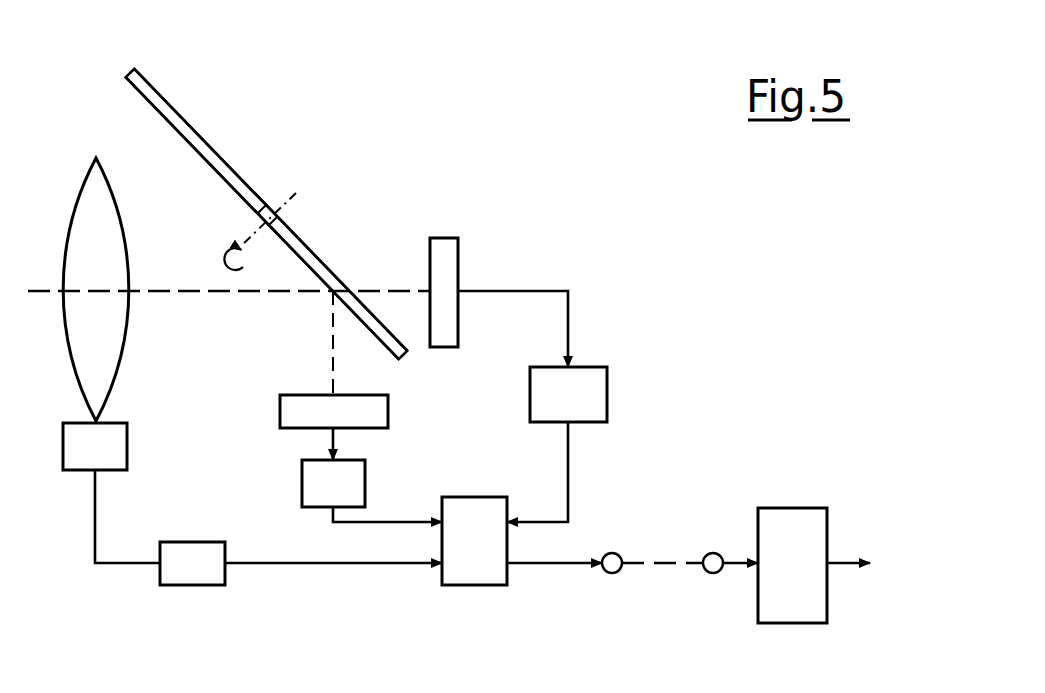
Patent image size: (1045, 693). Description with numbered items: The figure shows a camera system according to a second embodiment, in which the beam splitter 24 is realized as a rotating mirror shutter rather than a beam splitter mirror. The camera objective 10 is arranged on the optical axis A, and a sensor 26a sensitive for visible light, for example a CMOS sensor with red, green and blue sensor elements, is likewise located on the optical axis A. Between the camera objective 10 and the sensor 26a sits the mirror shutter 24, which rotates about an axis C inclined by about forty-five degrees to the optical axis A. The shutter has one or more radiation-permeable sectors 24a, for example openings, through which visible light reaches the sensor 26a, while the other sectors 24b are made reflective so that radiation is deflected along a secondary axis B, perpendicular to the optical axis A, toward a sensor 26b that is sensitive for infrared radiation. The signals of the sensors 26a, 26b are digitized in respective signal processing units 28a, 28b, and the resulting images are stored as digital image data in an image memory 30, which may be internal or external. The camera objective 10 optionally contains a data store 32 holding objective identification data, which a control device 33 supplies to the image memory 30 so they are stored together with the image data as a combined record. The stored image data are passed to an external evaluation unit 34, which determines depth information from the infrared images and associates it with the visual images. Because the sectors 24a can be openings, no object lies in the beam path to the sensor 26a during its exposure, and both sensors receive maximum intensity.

The camera objective 10 is at (110, 208).
The beam splitter 24 is at (242, 177).
The radiation-permeable sectors 24a is at (198, 150).
The reflective sectors 24b is at (302, 248).
The sensor sensitive for visible light 26a is at (450, 288).
The sensor sensitive for infrared radiation 26b is at (370, 405).
The signal processing unit 28a is at (595, 400).
The signal processing unit 28b is at (353, 480).
The image memory 30 is at (472, 580).
The data store 32 is at (113, 443).
The control device 33 is at (175, 573).
The evaluation unit 34 is at (782, 608).
The optical axis A is at (394, 289).
The secondary axis B is at (333, 354).
The axis of rotation of the mirror shutter C is at (298, 190).